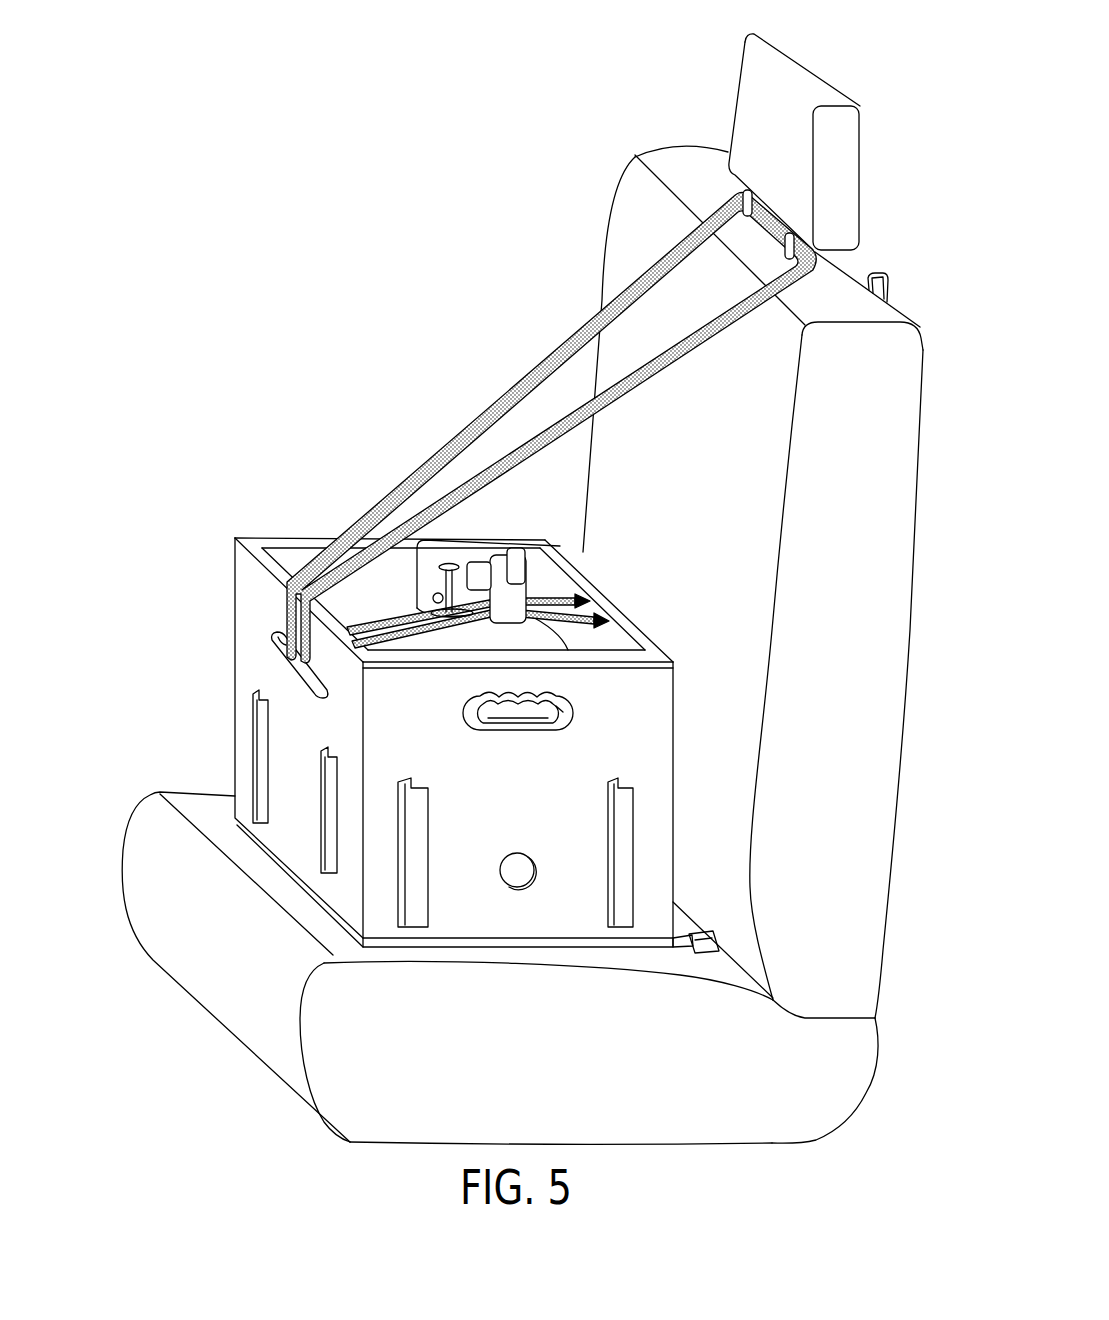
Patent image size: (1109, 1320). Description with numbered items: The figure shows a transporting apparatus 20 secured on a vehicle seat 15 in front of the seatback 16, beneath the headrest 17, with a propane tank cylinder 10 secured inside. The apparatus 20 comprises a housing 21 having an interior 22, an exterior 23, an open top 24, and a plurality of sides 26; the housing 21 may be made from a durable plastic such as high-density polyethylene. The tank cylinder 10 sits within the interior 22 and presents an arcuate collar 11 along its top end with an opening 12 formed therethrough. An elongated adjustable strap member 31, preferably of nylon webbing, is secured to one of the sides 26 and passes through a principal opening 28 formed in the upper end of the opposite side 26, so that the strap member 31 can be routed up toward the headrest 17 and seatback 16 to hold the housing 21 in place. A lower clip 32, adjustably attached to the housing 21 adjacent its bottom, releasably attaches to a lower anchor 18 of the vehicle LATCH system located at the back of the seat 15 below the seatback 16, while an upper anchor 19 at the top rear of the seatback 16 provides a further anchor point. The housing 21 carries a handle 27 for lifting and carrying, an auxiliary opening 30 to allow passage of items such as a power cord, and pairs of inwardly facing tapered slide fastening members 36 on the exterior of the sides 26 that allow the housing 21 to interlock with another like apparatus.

The propane tank cylinder 10 is at (445, 624).
The arcuate collar 11 is at (427, 572).
The opening 12 is at (515, 580).
The vehicle seat 15 is at (140, 815).
The seatback 16 is at (892, 592).
The headrest 17 is at (826, 86).
The lower anchor 18 is at (703, 950).
The upper anchor 19 is at (873, 277).
The transporting apparatus 20 is at (480, 568).
The housing 21 is at (440, 718).
The interior 22 is at (615, 637).
The exterior 23 is at (640, 683).
The open top 24 is at (287, 540).
The sides 26 is at (245, 680).
The handles 27 is at (513, 713).
The principal opening 28 is at (270, 647).
The auxiliary openings 30 is at (536, 874).
The strap member 31 is at (487, 415).
The lower clip 32 is at (685, 950).
The inwardly facing tapered slide fastening members 36 is at (255, 748).